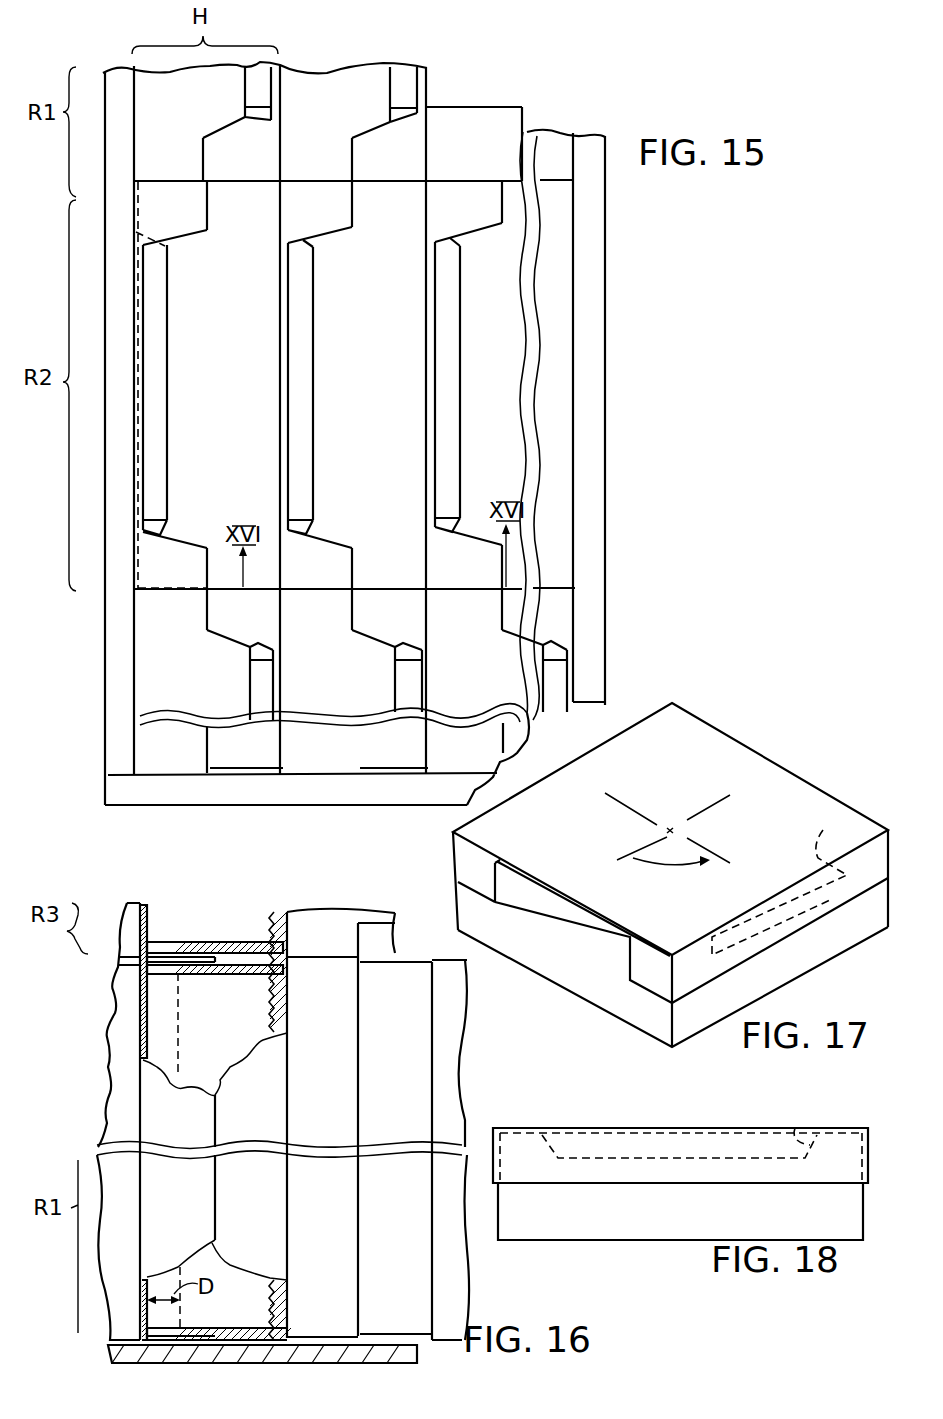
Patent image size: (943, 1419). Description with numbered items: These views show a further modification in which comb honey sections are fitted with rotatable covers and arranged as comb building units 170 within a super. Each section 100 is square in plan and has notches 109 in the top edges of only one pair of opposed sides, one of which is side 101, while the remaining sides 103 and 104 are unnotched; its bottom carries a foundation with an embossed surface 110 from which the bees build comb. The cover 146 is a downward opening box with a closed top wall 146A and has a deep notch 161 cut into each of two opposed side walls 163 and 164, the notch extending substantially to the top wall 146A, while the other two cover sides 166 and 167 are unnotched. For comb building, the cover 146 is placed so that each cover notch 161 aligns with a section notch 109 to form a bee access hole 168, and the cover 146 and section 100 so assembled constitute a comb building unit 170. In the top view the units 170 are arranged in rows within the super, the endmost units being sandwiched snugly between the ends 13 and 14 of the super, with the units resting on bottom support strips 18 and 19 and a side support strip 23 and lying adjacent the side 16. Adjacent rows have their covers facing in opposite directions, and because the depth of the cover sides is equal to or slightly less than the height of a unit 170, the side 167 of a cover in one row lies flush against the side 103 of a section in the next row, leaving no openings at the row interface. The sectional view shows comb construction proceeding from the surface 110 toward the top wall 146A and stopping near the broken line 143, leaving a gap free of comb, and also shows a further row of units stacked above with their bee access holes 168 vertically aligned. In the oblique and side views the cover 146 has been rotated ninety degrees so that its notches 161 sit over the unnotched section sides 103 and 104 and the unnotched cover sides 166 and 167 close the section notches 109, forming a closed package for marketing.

In FIG. 15, the end 13 is at (122, 428).
In FIG. 15, the end 14 is at (592, 274).
In FIG. 15, the side 16 is at (153, 795).
In FIG. 15, the support strip 18 is at (303, 530).
In FIG. 16, the support strip 18 is at (233, 1354).
In FIG. 15, the support strip 19 is at (477, 117).
In FIG. 15, the side support strip 23 is at (555, 665).
In FIG. 15, the comb honey section 100 is at (404, 174).
In FIG. 16, the comb honey section 100 is at (410, 948).
In FIG. 17, the comb honey section 100 is at (575, 1018).
In FIG. 18, the comb honey section 100 is at (600, 1257).
In FIG. 15, the side 101 is at (333, 420).
In FIG. 17, the side 101 is at (673, 938).
In FIG. 18, the side 101 is at (680, 1211).
In FIG. 15, the side 103 is at (262, 178).
In FIG. 17, the side 103 is at (883, 900).
In FIG. 18, the side 103 is at (867, 1208).
In FIG. 17, the side 104 is at (574, 954).
In FIG. 18, the side 104 is at (490, 1228).
In FIG. 15, the notch 109 is at (310, 248).
In FIG. 17, the notch 109 is at (789, 887).
In FIG. 18, the notch 109 is at (795, 1122).
In FIG. 16, the embossed surface 110 is at (270, 1019).
In FIG. 16, the broken line 143 is at (176, 1016).
In FIG. 15, the cover 146 is at (337, 172).
In FIG. 16, the cover 146 is at (336, 944).
In FIG. 17, the cover 146 is at (708, 738).
In FIG. 18, the cover 146 is at (562, 1128).
In FIG. 16, the top wall 146A is at (140, 1044).
In FIG. 15, the notch 161 is at (336, 233).
In FIG. 17, the notch 161 is at (502, 887).
In FIG. 15, the side wall 163 is at (378, 214).
In FIG. 17, the side wall 163 is at (470, 864).
In FIG. 18, the side wall 163 is at (488, 1152).
In FIG. 17, the side wall 164 is at (682, 707).
In FIG. 18, the side wall 164 is at (870, 1142).
In FIG. 17, the side 166 is at (600, 751).
In FIG. 15, the side 167 is at (308, 165).
In FIG. 17, the side 167 is at (888, 842).
In FIG. 18, the side 167 is at (681, 1156).
In FIG. 15, the bee access hole 168 is at (298, 318).
In FIG. 16, the bee access hole 168 is at (168, 925).
In FIG. 15, the comb building unit 170 is at (214, 58).
In FIG. 17, the comb building unit 170 is at (782, 746).
In FIG. 18, the comb building unit 170 is at (680, 1155).